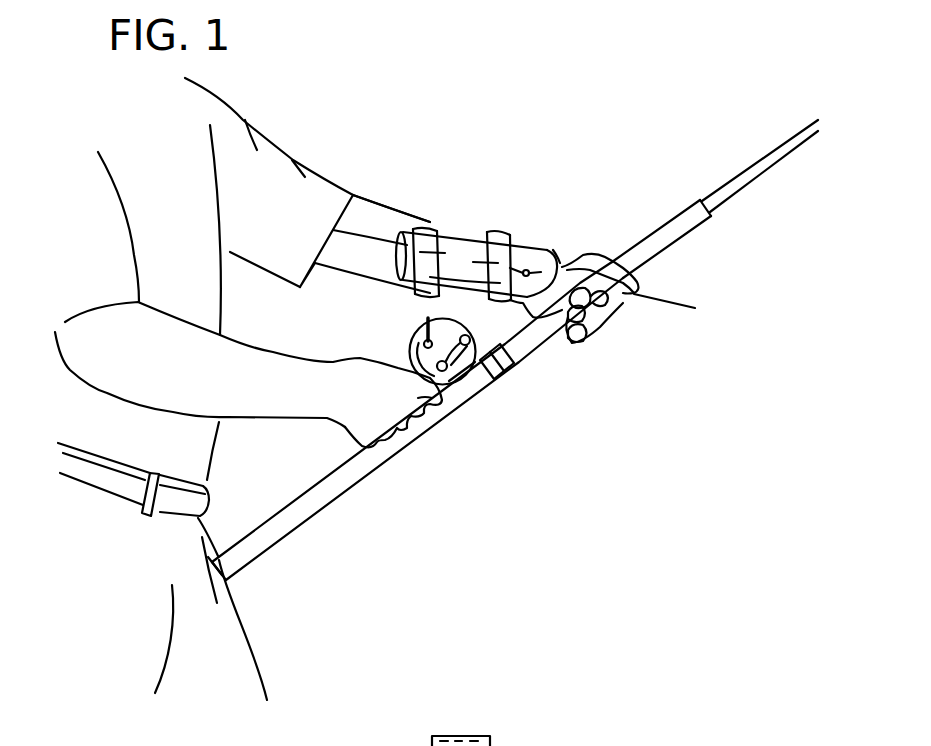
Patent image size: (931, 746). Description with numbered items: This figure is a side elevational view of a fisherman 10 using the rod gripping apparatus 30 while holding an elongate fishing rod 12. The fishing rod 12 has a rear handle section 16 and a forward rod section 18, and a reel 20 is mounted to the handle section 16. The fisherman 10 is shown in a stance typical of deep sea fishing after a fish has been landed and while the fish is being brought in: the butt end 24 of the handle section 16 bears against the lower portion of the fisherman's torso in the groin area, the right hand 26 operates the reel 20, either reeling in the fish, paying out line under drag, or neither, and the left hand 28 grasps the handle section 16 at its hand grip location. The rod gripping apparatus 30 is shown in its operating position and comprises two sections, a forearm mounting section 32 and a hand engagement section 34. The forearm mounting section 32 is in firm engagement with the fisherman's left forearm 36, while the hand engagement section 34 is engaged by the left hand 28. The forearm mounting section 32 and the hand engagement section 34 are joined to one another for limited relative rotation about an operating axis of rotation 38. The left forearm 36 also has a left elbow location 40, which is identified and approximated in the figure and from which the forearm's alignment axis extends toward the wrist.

The fisherman 10 is at (363, 166).
The fishing rod 12 is at (683, 242).
The handle section 16 is at (536, 352).
The forward rod section 18 is at (745, 180).
The reel 20 is at (418, 345).
The butt end 24 is at (216, 573).
The right hand 26 is at (350, 428).
The left hand 28 is at (595, 263).
The rod gripping apparatus 30 is at (501, 232).
The forearm mounting section 32 is at (458, 238).
The hand engagement section 34 is at (562, 263).
The left forearm 36 is at (387, 213).
The operating axis of rotation 38 is at (528, 268).
The left elbow location 40 is at (316, 192).